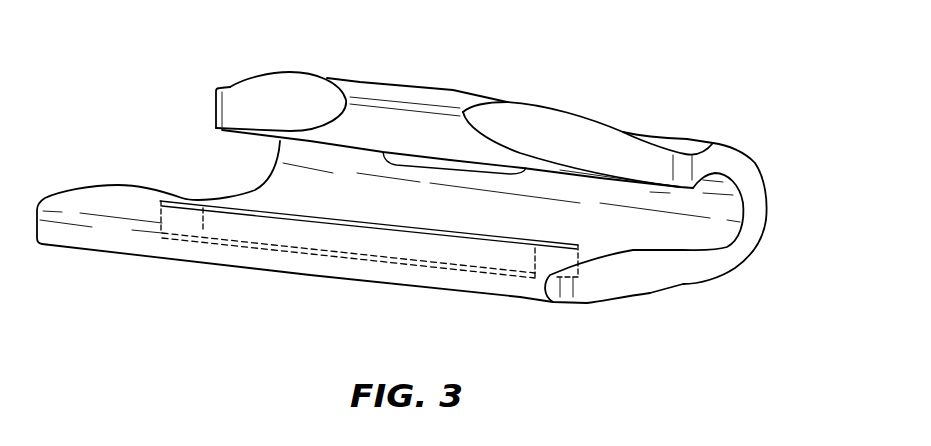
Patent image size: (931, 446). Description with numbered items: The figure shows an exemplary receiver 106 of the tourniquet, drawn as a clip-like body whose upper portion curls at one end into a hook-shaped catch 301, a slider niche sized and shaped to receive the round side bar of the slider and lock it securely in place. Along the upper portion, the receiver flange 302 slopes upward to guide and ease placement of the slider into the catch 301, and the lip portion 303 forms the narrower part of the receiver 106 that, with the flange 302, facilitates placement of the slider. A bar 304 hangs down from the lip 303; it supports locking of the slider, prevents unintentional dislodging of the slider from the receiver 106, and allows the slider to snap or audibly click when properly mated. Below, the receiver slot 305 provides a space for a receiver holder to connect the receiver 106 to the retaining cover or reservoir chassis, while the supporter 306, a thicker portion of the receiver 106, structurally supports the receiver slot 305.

The receiver 106 is at (307, 276).
The hook-shaped catch 301 is at (722, 203).
The receiver flange 302 is at (300, 102).
The lip portion 303 is at (453, 90).
The bar 304 is at (416, 160).
The receiver slot 305 is at (180, 200).
The supporter 306 is at (627, 250).